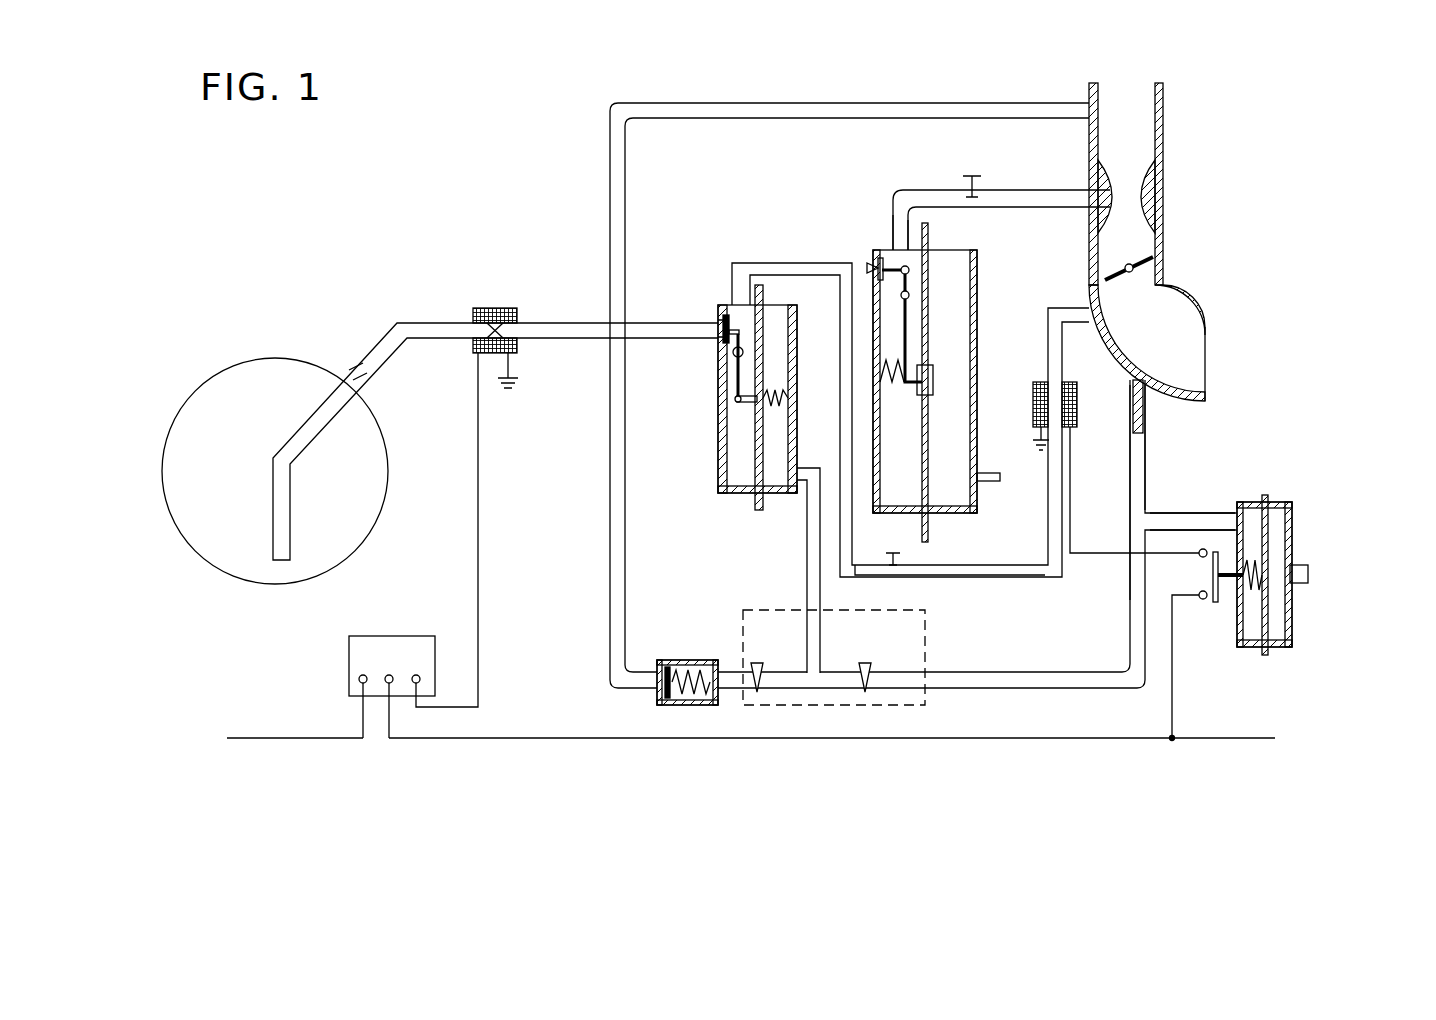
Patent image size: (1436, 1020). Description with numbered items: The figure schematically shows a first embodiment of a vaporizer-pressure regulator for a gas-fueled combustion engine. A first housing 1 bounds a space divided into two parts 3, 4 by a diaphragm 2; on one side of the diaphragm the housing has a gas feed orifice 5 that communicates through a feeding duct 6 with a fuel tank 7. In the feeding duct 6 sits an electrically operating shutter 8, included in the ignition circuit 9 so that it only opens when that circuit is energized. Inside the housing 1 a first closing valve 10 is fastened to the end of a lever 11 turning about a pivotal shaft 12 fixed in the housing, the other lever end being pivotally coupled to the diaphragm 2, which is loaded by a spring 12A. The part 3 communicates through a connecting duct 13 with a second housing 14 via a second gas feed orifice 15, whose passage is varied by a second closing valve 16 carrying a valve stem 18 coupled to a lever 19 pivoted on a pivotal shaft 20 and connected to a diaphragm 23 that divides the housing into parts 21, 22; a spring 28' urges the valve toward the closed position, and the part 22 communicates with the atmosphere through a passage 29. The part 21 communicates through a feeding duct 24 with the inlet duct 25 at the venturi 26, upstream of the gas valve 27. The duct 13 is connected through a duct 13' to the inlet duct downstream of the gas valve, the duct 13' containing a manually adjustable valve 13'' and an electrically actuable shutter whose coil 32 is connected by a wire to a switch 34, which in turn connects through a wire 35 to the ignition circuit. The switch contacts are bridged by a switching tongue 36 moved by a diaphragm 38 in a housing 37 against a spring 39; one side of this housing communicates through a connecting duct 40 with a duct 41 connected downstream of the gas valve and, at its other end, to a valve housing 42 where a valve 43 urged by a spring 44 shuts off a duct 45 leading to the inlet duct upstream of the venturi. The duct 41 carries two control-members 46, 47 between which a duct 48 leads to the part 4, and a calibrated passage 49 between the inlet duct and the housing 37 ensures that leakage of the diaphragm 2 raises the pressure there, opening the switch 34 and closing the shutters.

The first housing 1 is at (720, 468).
The diaphragm 2 is at (767, 462).
The first part of the space 3 is at (745, 428).
The second part of the space 4 is at (795, 440).
The gas feed orifice 5 is at (718, 323).
The feeding duct 6 is at (560, 338).
The fuel tank 7 is at (365, 463).
The electrically operating shutter 8 is at (481, 486).
The ignition circuit 9 is at (577, 738).
The first closing valve 10 is at (726, 312).
The lever 11 is at (735, 398).
The pivotal shaft 12 is at (733, 352).
The spring 12A is at (785, 395).
The connecting duct 13 is at (908, 395).
The duct 13' is at (950, 590).
The manually adjustable valve 13'' is at (940, 550).
The second housing 14 is at (977, 310).
The second gas feed orifice 15 is at (870, 275).
The second closing valve 16 is at (880, 258).
The valve stem 18 is at (893, 265).
The lever 19 is at (908, 335).
The pivotal shaft 20 is at (910, 293).
The first part of the second housing space 21 is at (905, 495).
The second part of the second housing space 22 is at (960, 493).
The diaphragm 23 is at (933, 475).
The feeding duct 24 is at (1030, 190).
The inlet duct 25 is at (1160, 140).
The venturi 26 is at (1160, 190).
The gas valve 27 is at (1160, 262).
The spring 28' is at (902, 406).
The passage 29 is at (990, 472).
The coil 32 is at (1040, 382).
The switch 34 is at (1207, 572).
The wire 35 is at (1175, 675).
The switching tongue 36 is at (1222, 602).
The housing 37 is at (1295, 605).
The diaphragm 38 is at (1290, 502).
The spring 39 is at (1262, 520).
The connecting duct 40 is at (1200, 520).
The duct 41 is at (1140, 447).
The valve housing 42 is at (700, 660).
The valve 43 is at (668, 660).
The spring 44 is at (700, 712).
The duct 45 is at (612, 505).
The control-member 46 is at (868, 670).
The control-member 47 is at (764, 675).
The duct 48 is at (812, 563).
The calibrated passage 49 is at (1143, 400).